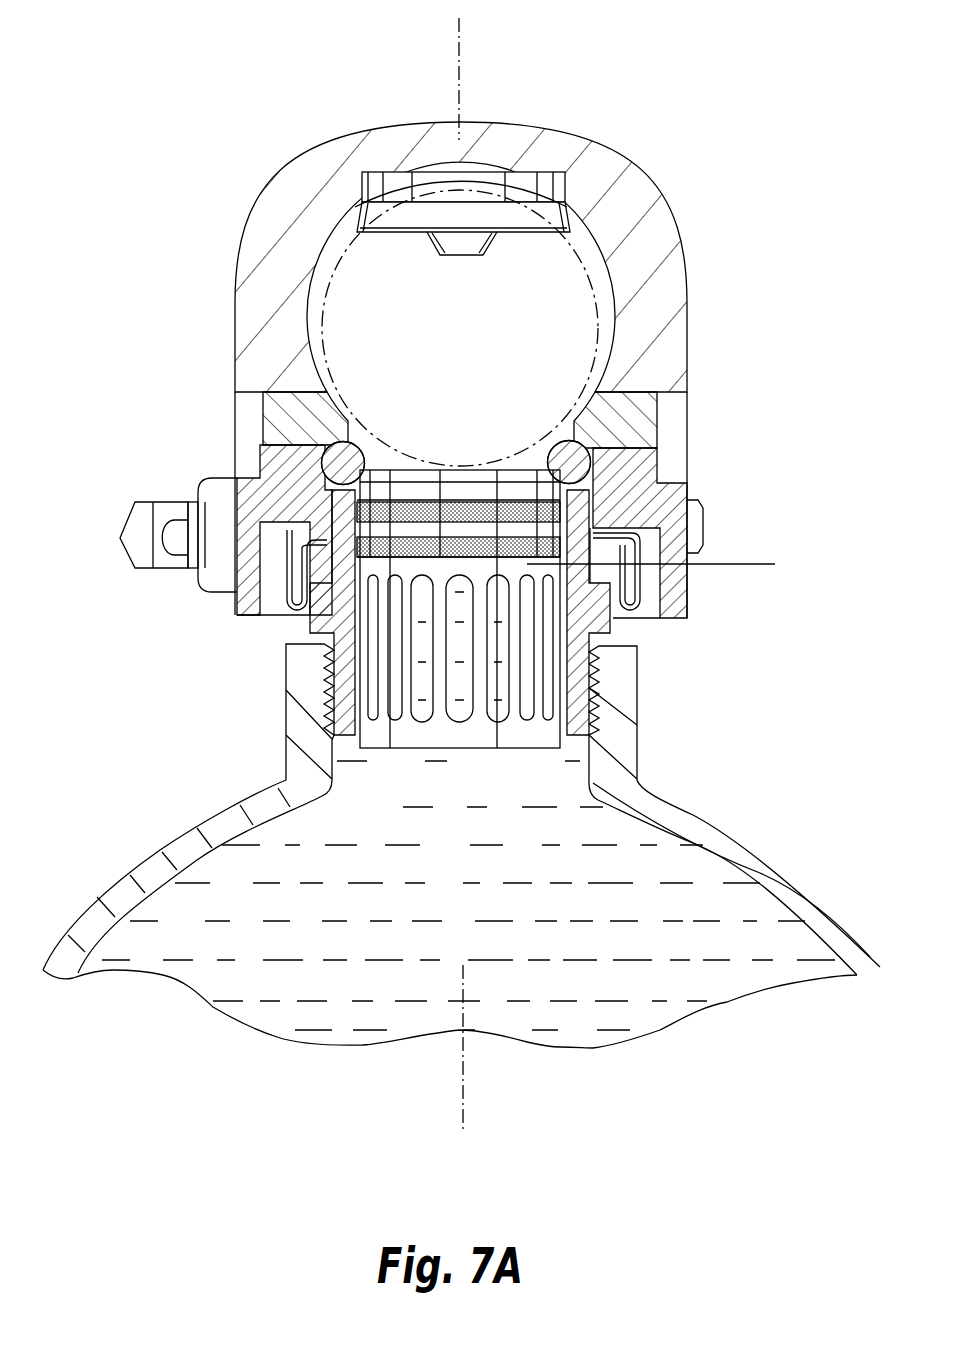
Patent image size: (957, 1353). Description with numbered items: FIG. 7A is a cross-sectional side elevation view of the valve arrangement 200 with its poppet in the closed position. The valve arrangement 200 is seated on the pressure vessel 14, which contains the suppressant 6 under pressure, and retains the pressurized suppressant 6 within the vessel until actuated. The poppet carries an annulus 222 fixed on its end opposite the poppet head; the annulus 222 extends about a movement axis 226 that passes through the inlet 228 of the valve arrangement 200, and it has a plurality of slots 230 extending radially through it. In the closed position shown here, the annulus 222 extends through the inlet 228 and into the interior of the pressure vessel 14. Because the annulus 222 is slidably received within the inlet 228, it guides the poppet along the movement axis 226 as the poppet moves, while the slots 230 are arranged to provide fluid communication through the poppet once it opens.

The valve arrangement 200 is at (189, 152).
The movement axis 226 is at (460, 1112).
The annulus 222 is at (405, 732).
The inlet 228 is at (440, 583).
The slots 230 is at (466, 706).
The pressure vessel 14 is at (92, 907).
The suppressant 6 is at (229, 877).